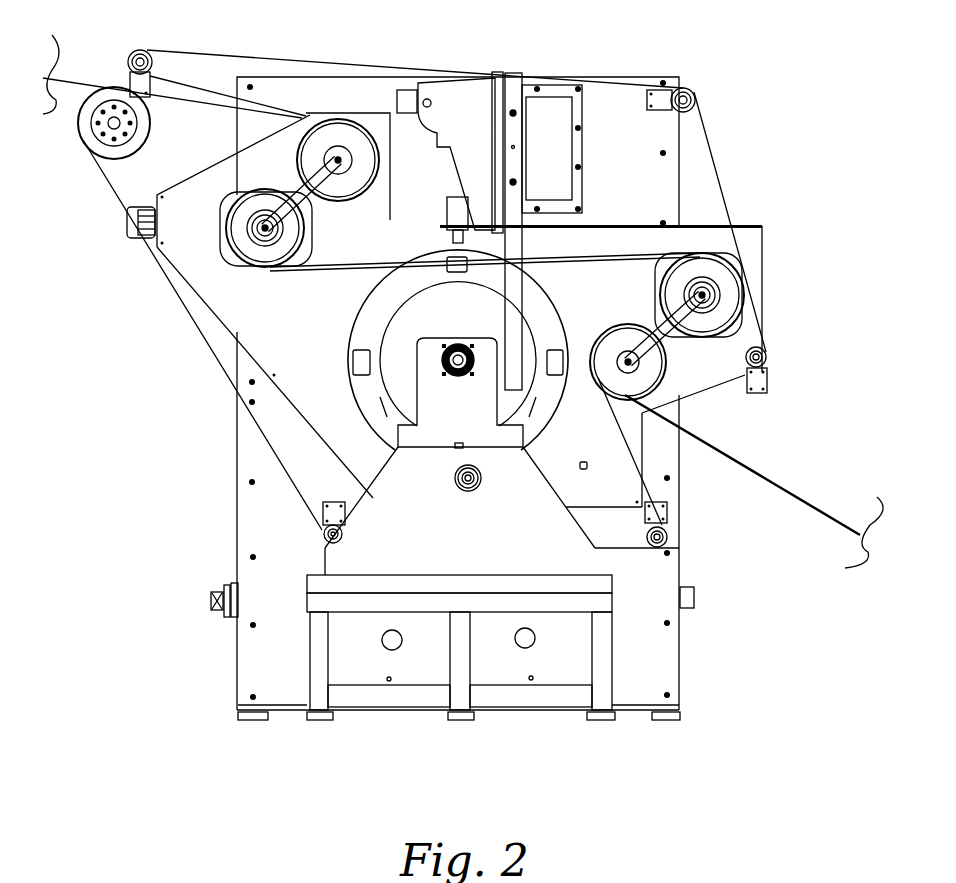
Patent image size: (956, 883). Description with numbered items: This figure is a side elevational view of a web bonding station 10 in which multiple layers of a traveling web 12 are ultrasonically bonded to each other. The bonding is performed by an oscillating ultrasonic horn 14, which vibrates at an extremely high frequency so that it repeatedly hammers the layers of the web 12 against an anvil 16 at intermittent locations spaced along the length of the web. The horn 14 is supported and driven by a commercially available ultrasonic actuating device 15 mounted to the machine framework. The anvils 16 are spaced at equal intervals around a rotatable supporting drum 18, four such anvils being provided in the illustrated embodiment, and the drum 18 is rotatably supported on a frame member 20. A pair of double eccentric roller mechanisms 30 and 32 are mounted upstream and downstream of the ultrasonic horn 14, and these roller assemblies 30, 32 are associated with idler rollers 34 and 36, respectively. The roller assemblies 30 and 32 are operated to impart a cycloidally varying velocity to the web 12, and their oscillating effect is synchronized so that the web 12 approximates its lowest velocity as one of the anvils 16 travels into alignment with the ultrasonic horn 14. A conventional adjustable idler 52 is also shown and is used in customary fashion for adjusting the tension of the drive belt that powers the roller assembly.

The web bonding station 10 is at (104, 699).
The web 12 is at (783, 490).
The ultrasonic horn 14 is at (462, 213).
The ultrasonic actuating device 15 is at (467, 107).
The anvil 16 is at (478, 266).
The rotatable supporting drum 18 is at (385, 313).
The frame member 20 is at (470, 545).
The double eccentric roller mechanism 30 is at (250, 254).
The double eccentric roller mechanism 32 is at (731, 287).
The idler roller 34 is at (335, 138).
The idler roller 36 is at (662, 363).
The adjustable idler 52 is at (310, 523).